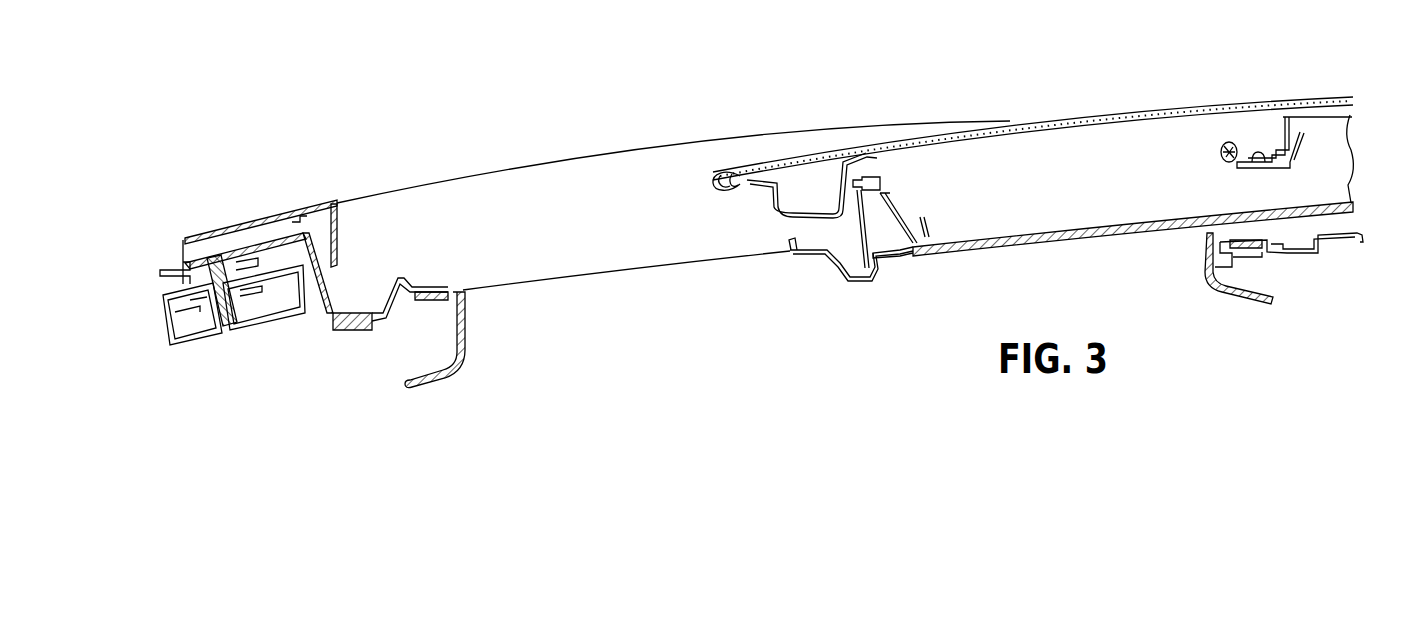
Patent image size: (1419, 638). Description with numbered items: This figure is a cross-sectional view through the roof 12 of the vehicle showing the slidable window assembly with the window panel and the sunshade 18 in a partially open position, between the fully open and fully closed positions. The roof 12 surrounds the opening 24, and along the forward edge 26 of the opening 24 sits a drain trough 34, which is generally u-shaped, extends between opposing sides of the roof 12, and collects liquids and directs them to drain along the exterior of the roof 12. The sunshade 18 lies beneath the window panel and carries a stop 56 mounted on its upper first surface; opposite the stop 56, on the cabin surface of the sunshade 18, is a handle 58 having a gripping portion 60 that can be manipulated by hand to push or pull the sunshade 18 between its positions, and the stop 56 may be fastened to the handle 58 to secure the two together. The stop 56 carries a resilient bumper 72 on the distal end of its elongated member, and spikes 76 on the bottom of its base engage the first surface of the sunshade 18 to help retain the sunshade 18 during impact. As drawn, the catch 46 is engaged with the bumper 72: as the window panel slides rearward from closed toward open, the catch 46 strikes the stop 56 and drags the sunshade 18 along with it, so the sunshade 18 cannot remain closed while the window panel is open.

The roof 12 is at (250, 221).
The sunshade 18 is at (1053, 118).
The opening 24 is at (582, 125).
The forward edge 26 is at (347, 203).
The drain trough 34 is at (358, 315).
The catch 46 is at (1262, 112).
The stop 56 is at (877, 187).
The handle 58 is at (897, 253).
The gripping portion 60 is at (890, 268).
The bumper 72 is at (1250, 165).
The spikes 76 is at (985, 230).